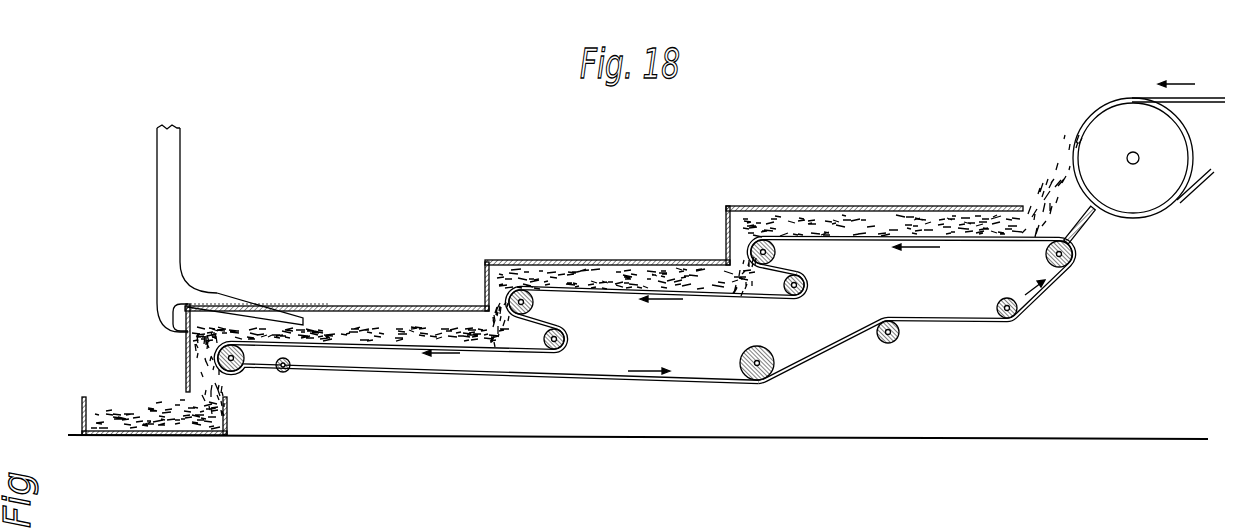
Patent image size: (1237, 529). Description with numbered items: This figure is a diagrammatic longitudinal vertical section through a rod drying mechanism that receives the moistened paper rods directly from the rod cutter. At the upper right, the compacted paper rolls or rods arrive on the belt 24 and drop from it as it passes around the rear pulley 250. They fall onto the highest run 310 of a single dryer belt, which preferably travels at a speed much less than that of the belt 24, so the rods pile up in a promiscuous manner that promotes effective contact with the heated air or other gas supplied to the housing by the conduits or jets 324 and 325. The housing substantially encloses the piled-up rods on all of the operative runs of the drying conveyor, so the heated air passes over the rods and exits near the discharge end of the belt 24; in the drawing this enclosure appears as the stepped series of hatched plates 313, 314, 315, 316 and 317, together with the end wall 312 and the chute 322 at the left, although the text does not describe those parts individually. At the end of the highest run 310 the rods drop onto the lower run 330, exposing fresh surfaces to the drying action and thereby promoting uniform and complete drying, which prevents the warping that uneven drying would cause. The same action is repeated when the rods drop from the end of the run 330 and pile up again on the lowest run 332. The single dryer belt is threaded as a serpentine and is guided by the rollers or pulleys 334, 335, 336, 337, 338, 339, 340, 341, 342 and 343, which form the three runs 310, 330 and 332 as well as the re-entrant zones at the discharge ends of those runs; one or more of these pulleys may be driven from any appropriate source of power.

The belt 24 is at (1207, 97).
The rear pulley 250 is at (1188, 142).
The highest run 310 is at (992, 243).
The end wall 312 is at (186, 351).
The lower plate 313 is at (347, 307).
The first step plate 314 is at (485, 277).
The middle plate 315 is at (573, 262).
The second step plate 316 is at (726, 225).
The upper plate 317 is at (840, 206).
The chute 322 is at (181, 182).
The conduit or jet 324 is at (278, 318).
The conduit or jet 325 is at (170, 325).
The lower run 330 is at (713, 297).
The run 332 is at (395, 347).
The roller or pulley 334 is at (1074, 258).
The roller or pulley 335 is at (777, 252).
The roller or pulley 336 is at (805, 287).
The roller or pulley 337 is at (534, 302).
The roller or pulley 338 is at (556, 350).
The roller or pulley 339 is at (238, 370).
The roller or pulley 340 is at (290, 372).
The roller or pulley 341 is at (750, 383).
The roller or pulley 342 is at (887, 344).
The roller or pulley 343 is at (1000, 319).